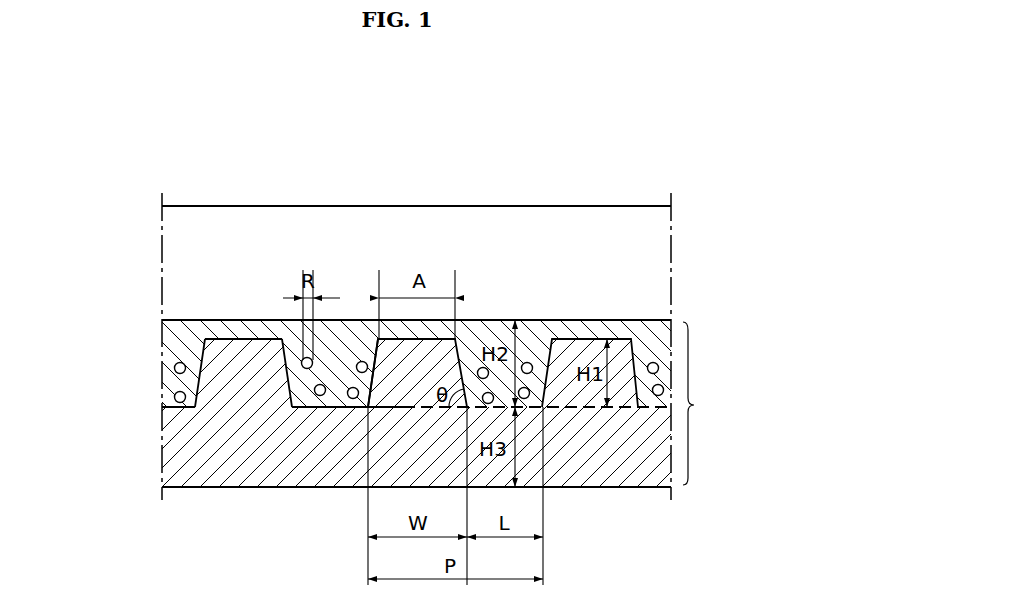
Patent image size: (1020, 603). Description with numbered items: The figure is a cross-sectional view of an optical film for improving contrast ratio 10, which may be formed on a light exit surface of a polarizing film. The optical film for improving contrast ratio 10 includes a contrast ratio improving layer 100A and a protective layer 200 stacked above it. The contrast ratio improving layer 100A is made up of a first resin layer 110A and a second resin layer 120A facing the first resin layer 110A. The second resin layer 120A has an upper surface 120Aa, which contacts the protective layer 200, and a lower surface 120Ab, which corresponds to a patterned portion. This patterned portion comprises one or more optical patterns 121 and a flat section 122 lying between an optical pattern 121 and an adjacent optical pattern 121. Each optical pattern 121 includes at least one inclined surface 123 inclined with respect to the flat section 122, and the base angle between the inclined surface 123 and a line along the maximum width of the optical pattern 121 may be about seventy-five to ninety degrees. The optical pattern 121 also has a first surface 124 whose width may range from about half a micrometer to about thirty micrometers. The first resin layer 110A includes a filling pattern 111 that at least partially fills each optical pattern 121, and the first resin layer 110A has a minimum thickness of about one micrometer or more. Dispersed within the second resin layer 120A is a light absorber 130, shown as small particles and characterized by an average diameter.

The optical film for improving contrast ratio 10 is at (604, 167).
The protective layer 200 is at (660, 243).
The contrast ratio improving layer 100A is at (720, 403).
The first resin layer 110A is at (167, 445).
The filling pattern 111 is at (240, 367).
The second resin layer 120A is at (165, 367).
The upper surface 120Aa is at (627, 320).
The lower surface 120Ab is at (653, 408).
The optical pattern 121 is at (273, 375).
The flat section 122 is at (330, 400).
The inclined surface 123 is at (376, 350).
The first surface 124 is at (245, 339).
The light absorber 130 is at (362, 361).